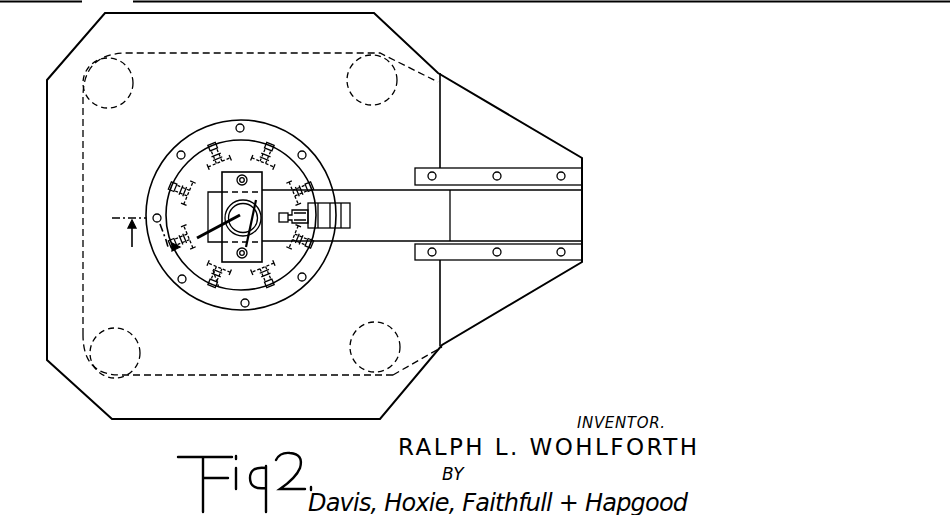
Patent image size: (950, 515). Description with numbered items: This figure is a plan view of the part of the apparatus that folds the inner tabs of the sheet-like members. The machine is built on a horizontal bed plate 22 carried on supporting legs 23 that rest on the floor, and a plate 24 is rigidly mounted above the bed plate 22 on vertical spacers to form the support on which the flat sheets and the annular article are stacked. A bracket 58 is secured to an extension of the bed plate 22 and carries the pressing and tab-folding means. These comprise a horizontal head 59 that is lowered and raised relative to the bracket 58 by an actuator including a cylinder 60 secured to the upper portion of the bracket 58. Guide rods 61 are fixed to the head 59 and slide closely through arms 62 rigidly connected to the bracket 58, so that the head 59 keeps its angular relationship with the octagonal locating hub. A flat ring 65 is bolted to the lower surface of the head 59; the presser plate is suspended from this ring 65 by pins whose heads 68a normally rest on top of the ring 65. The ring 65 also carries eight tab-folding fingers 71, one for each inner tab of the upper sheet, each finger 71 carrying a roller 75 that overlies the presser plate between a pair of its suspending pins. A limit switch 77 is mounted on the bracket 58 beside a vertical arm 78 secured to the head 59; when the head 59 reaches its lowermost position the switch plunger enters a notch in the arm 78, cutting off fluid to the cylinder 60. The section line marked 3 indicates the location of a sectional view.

The bed plate 22 is at (83, 166).
The supporting legs 23 is at (99, 79).
The plate 24 is at (72, 311).
The flat ring 65 is at (206, 136).
The horizontal head 59 is at (262, 286).
The heads 68a is at (241, 124).
The tab-folding fingers 71 is at (177, 174).
The roller 75 is at (215, 288).
The cylinder 60 is at (206, 190).
The arms 62 is at (228, 249).
The guide rods 61 is at (243, 175).
The bracket 58 is at (395, 194).
The limit switch 77 is at (334, 218).
The vertical arm 78 is at (300, 210).
The section line 3- 3 is at (183, 227).